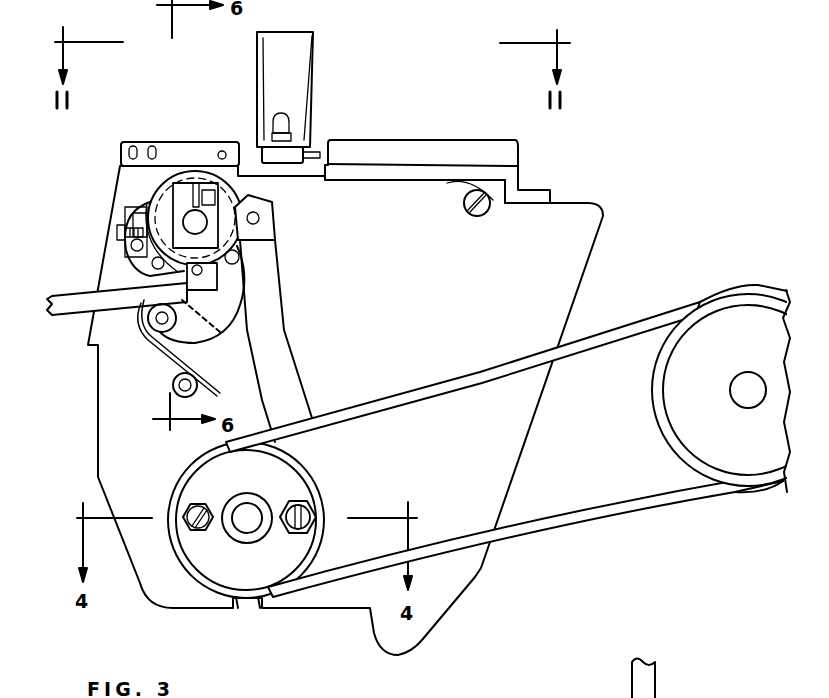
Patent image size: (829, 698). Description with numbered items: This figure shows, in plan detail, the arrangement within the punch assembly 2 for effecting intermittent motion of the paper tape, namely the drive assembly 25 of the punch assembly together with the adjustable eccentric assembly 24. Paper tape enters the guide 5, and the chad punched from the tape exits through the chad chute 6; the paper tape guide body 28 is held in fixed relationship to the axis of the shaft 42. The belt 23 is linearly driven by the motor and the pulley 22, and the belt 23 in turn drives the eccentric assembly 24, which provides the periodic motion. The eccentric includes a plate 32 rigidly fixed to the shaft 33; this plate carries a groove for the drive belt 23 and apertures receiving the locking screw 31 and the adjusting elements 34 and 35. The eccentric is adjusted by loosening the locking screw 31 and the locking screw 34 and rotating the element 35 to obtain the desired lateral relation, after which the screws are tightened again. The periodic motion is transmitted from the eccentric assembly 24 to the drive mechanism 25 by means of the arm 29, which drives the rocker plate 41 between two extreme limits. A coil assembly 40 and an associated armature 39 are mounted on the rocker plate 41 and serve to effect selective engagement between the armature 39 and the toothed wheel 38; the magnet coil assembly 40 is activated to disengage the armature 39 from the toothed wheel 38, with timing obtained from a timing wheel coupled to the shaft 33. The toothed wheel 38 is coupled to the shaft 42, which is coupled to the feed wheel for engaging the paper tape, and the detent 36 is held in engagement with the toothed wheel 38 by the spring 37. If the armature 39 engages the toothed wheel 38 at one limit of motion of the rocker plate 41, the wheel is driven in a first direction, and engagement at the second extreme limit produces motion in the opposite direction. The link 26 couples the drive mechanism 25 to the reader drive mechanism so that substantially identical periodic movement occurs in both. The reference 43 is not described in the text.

The punch assembly 2 is at (138, 110).
The guide 5 is at (453, 142).
The chad chute 6 is at (257, 42).
The pulley 22 is at (650, 408).
The belt 23 is at (455, 372).
The eccentric assembly 24 is at (245, 602).
The drive assembly 25 is at (267, 200).
The link 26 is at (82, 283).
The body 28 is at (120, 157).
The arm 29 is at (278, 308).
The locking screw 31 is at (187, 507).
The plate 32 is at (203, 467).
The shaft 33 is at (245, 503).
The locking screw 34 is at (315, 530).
The adjusting element 35 is at (313, 498).
The detent 36 is at (200, 340).
The spring 37 is at (168, 350).
The toothed wheel 38 is at (152, 193).
The armature 39 is at (147, 205).
The coil assembly 40 is at (117, 233).
The rocker plate 41 is at (275, 233).
The shaft 42 is at (208, 220).
The lamp base 43 is at (266, 137).